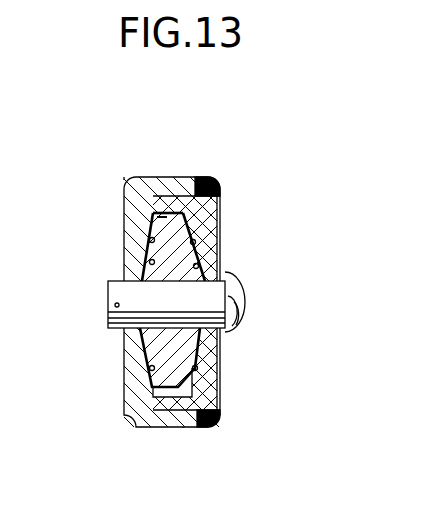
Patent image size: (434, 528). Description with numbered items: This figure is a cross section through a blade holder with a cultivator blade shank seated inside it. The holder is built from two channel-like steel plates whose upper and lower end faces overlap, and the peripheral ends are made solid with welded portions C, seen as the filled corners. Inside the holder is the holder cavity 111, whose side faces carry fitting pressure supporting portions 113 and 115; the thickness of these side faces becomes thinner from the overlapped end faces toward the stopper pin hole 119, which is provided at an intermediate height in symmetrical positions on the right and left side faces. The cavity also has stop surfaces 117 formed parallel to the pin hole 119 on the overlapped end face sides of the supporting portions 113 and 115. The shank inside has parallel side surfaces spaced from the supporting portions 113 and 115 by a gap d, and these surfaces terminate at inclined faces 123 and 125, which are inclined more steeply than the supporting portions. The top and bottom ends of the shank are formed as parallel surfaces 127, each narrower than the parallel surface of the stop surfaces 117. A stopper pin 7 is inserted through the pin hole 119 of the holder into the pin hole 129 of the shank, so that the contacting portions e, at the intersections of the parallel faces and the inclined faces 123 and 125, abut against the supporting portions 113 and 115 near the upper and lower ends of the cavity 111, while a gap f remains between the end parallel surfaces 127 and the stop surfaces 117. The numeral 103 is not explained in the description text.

The stopper pin 7 is at (248, 302).
The top wall 103 is at (180, 177).
The holder cavity 111 is at (217, 202).
The fitting pressure supporting portion 113 is at (123, 268).
The fitting pressure supporting portion 115 is at (210, 277).
The stop surface 117 is at (150, 177).
The stopper pin hole 119 is at (217, 353).
The inclined face 123 is at (122, 217).
The inclined face 125 is at (218, 227).
The parallel surface 127 is at (200, 175).
The pin hole 129 is at (108, 323).
The welded portion c is at (218, 185).
The gap d is at (217, 367).
The contacting portion e is at (215, 260).
The gap f is at (125, 178).